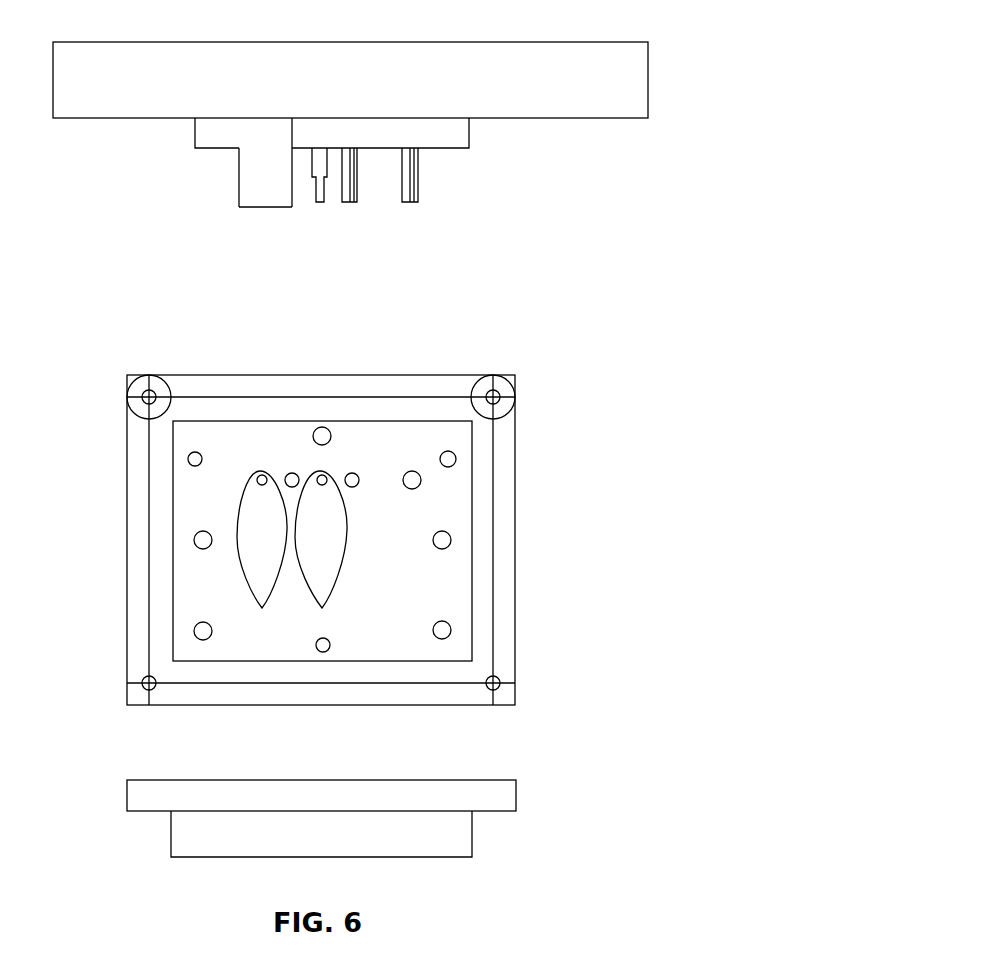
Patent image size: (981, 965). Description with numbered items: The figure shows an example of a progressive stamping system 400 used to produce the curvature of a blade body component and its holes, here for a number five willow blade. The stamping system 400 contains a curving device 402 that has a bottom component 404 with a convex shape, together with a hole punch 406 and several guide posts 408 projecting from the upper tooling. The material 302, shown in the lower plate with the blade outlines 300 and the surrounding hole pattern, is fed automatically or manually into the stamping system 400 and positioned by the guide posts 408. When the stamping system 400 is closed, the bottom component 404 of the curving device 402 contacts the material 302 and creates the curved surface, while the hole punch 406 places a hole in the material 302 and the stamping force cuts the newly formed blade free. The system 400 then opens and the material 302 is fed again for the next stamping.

The leaf-shaped lure body 300 is at (328, 532).
The material 302 is at (210, 497).
The progressive stamping system 400 is at (722, 134).
The curving device 402 is at (257, 177).
The bottom component 404 is at (263, 210).
The hole punch 406 is at (317, 205).
The guide posts 408 is at (355, 205).